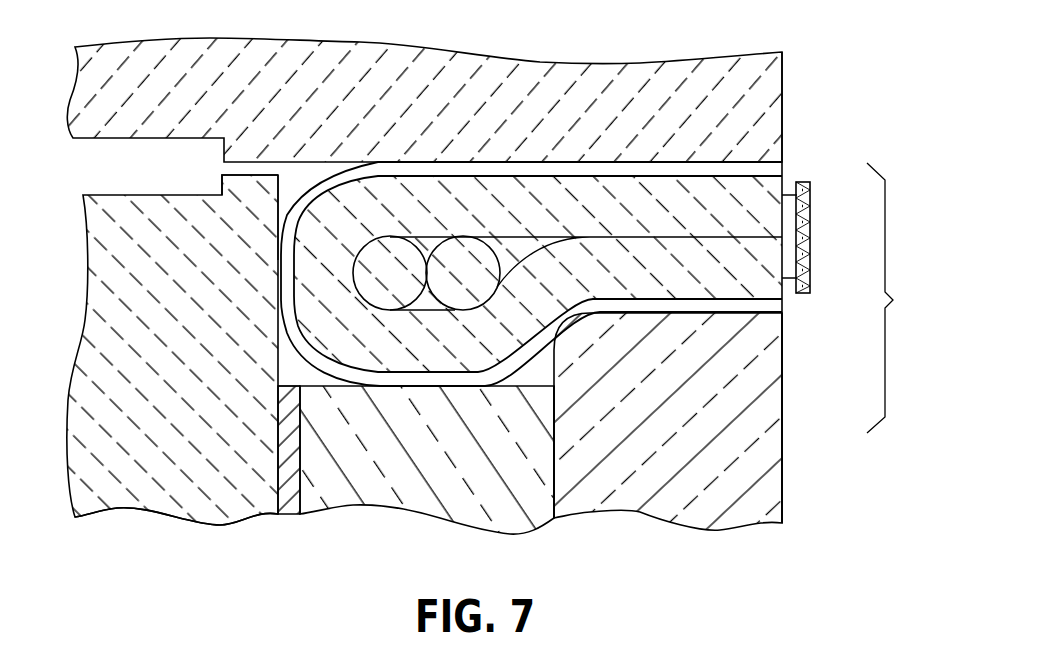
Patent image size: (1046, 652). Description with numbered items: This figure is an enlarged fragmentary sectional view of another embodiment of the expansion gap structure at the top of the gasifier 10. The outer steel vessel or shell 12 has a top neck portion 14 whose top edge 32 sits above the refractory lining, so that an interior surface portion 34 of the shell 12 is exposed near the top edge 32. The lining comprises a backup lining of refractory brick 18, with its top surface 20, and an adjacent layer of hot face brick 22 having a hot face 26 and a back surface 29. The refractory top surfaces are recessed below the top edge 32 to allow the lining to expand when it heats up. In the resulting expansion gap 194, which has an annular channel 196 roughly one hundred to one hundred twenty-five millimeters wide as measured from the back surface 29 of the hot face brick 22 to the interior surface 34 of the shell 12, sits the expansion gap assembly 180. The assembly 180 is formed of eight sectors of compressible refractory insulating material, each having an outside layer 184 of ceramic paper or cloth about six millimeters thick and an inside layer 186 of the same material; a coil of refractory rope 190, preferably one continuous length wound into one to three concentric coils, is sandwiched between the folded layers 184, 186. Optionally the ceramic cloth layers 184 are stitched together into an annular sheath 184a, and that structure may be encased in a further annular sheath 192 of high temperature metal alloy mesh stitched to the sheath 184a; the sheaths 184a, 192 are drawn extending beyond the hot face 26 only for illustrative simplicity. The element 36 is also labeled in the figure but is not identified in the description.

The gasifier 10 is at (157, 552).
The outer steel vessel or shell 12 is at (85, 282).
The top neck portion 14 is at (115, 512).
The backup lining of refractory brick 18 is at (367, 513).
The top surface of backup brick 20 is at (328, 386).
The hot face brick 22 is at (625, 520).
The hot face 26 is at (783, 402).
The back surface of hot face brick 29 is at (547, 487).
The top edge of gasifier neck 32 is at (233, 173).
The interior surface portion of gasifier shell 34 is at (283, 205).
The cover member 36 is at (783, 95).
The expansion gap assembly 180 is at (313, 184).
The outside layer 184 is at (528, 170).
The annular sheath of ceramic cloth 184a is at (790, 193).
The inside layer 186 is at (625, 193).
The coil of refractory rope 190 is at (400, 272).
The annular sheath of high temperature metal alloy 192 is at (802, 292).
The expansion gap 194 is at (904, 298).
The annular channel 196 is at (280, 386).